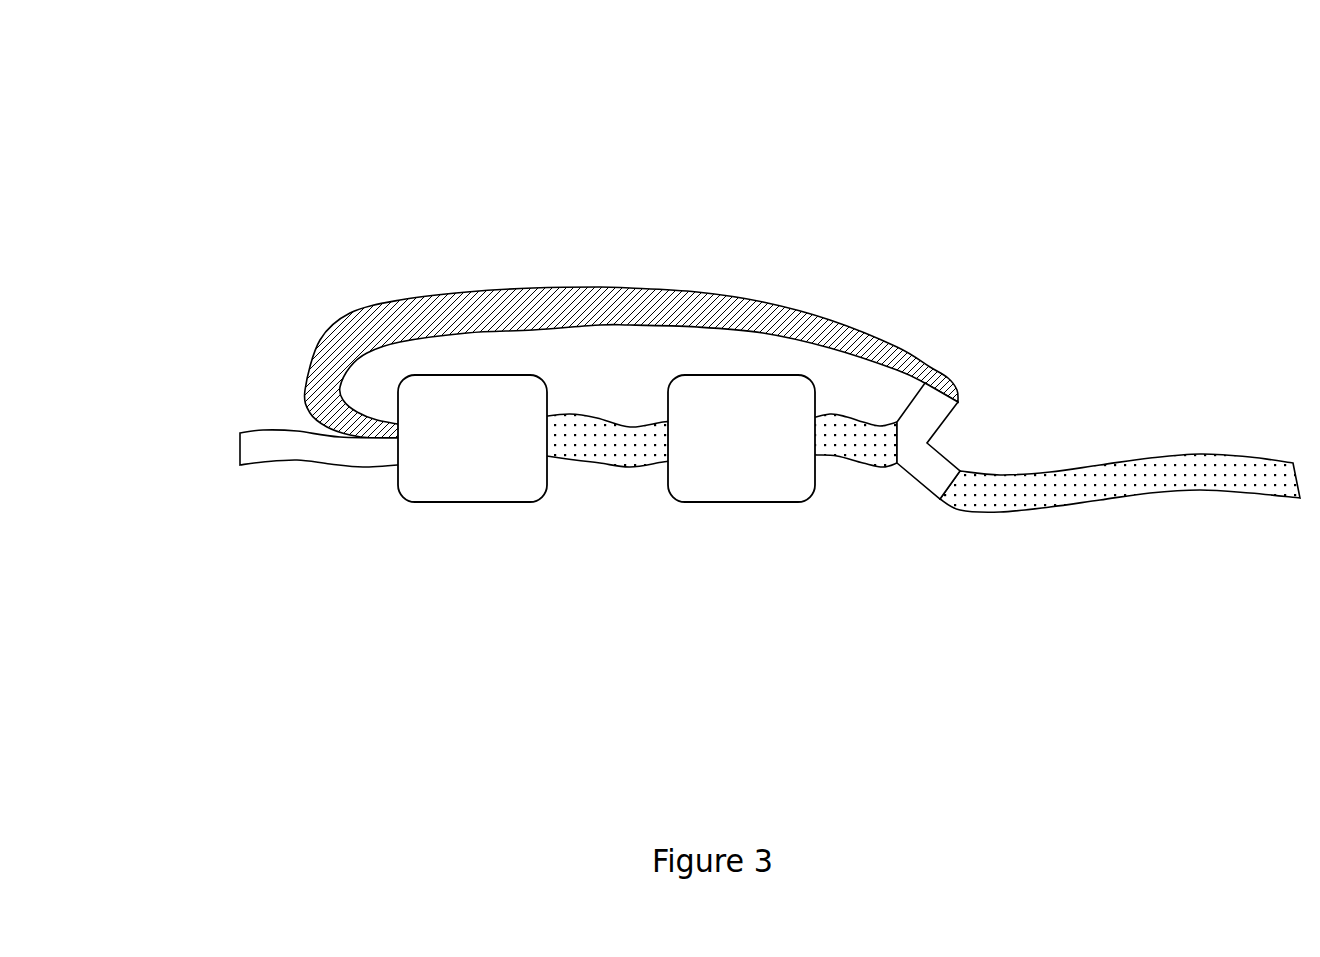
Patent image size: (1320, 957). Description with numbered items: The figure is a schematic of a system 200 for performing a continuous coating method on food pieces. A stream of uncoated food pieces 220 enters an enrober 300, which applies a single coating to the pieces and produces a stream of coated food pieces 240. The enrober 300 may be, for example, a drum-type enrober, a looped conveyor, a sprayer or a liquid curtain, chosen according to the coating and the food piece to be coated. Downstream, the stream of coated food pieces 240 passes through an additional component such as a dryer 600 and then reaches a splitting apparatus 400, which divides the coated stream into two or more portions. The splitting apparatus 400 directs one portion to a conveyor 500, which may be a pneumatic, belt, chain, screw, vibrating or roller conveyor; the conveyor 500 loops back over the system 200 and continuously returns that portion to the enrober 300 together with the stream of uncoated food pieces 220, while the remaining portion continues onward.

The system 200 is at (432, 80).
The stream of uncoated food pieces 220 is at (282, 438).
The stream of coated food pieces 240 is at (634, 450).
The enrober 300 is at (455, 520).
The splitting apparatus 400 is at (930, 467).
The conveyor 500 is at (942, 353).
The dryer 600 is at (757, 487).